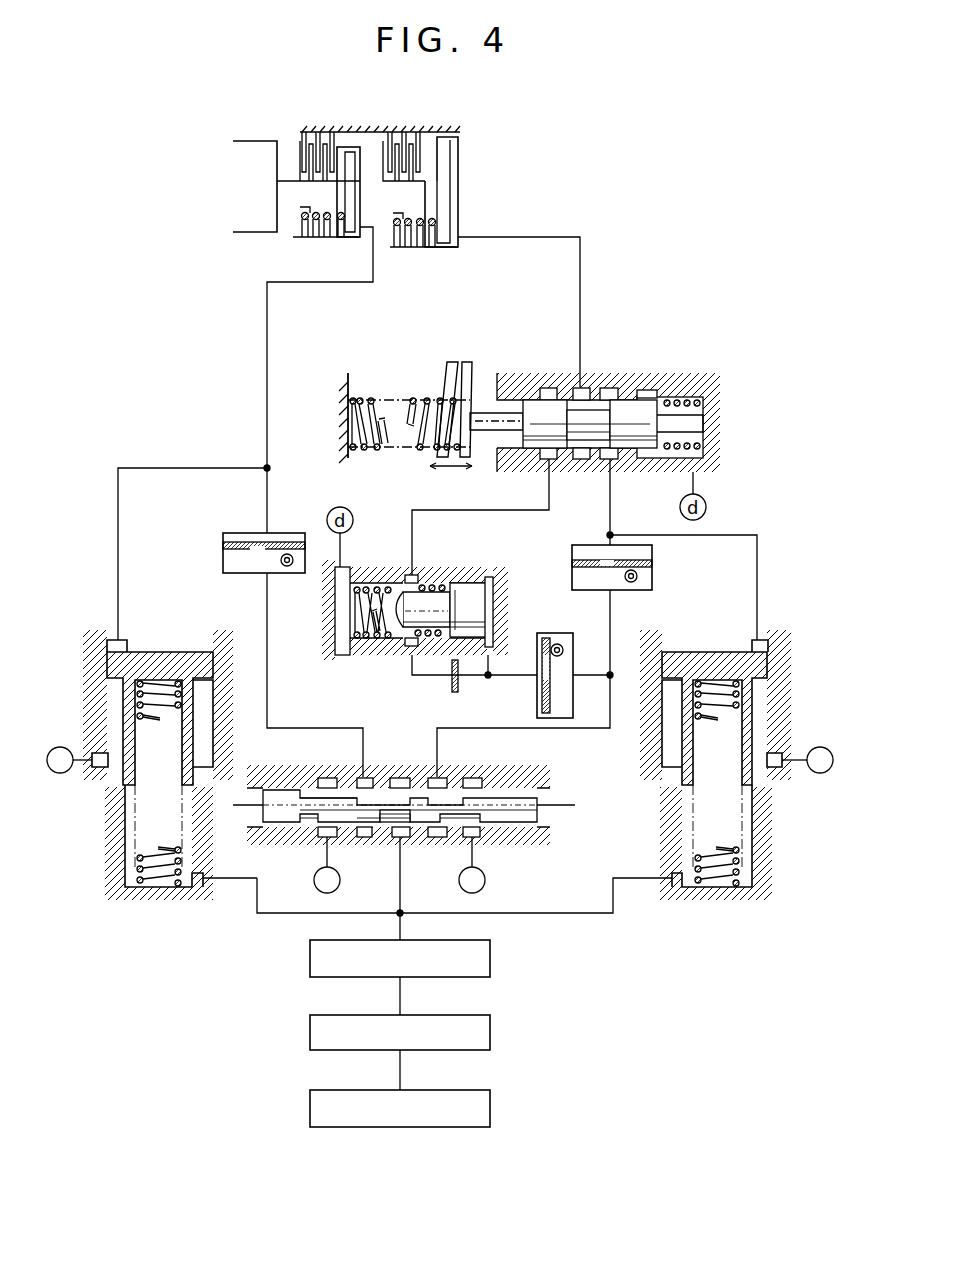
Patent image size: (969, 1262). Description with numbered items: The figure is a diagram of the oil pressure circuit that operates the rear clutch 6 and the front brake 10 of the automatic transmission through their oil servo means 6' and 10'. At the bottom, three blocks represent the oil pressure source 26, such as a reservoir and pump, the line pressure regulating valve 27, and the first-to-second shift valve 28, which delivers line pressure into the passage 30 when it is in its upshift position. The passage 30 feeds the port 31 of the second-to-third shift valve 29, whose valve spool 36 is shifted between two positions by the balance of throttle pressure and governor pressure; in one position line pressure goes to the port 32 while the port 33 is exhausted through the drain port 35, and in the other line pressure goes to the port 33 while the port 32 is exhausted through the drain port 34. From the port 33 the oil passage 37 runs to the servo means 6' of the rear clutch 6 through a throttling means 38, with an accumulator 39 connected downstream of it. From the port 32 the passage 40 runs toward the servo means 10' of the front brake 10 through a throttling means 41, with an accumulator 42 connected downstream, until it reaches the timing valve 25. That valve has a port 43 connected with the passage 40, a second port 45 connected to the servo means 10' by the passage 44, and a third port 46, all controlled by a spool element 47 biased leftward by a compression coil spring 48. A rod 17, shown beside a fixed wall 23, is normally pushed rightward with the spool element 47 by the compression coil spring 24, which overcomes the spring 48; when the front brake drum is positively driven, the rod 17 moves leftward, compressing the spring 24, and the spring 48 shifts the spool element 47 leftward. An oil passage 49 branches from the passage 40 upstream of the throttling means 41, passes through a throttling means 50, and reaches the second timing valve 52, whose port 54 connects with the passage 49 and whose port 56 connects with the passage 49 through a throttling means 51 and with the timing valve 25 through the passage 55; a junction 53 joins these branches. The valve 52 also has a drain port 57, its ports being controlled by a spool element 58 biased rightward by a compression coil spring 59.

The rear clutch 6 is at (346, 162).
The oil servo means of the rear clutch 6' is at (343, 192).
The front brake 10 is at (404, 137).
The oil servo means of the front brake 10' is at (449, 192).
The rod 17 is at (468, 366).
The fixed wall 23 is at (344, 395).
The compression coil spring 24 is at (368, 397).
The timing valve 25 is at (626, 393).
The source means of oil pressure 26 is at (490, 1108).
The line pressure regulating valve 27 is at (490, 1033).
The 1-2 shift valve 28 is at (490, 958).
The 2-3 shift valve 29 is at (409, 816).
The passage 30 is at (402, 882).
The port 31 is at (401, 776).
The port 32 is at (439, 776).
The port 33 is at (360, 776).
The drain port 34 is at (478, 770).
The drain port 35 is at (328, 768).
The valve spool 36 is at (385, 834).
The oil passage 37 is at (266, 337).
The throttling means 38 is at (283, 530).
The accumulator 39 is at (95, 722).
The passage 40 is at (608, 493).
The throttling means 41 is at (652, 578).
The accumulator 42 is at (775, 720).
The port 43 is at (614, 385).
The passage 44 is at (581, 283).
The second port 45 is at (584, 385).
The third port 46 is at (548, 385).
The spool element 47 is at (652, 389).
The compression coil spring 48 is at (690, 375).
The oil passage 49 is at (594, 674).
The throttling means 50 is at (560, 640).
The throttling means 51 is at (452, 690).
The second timing valve 52 is at (432, 620).
The oil line 53 is at (490, 671).
The port 54 is at (489, 577).
The passage 55 is at (458, 510).
The port 56 is at (406, 574).
The drain port 57 is at (340, 657).
The spool element 58 is at (487, 600).
The compression coil spring 59 is at (368, 636).